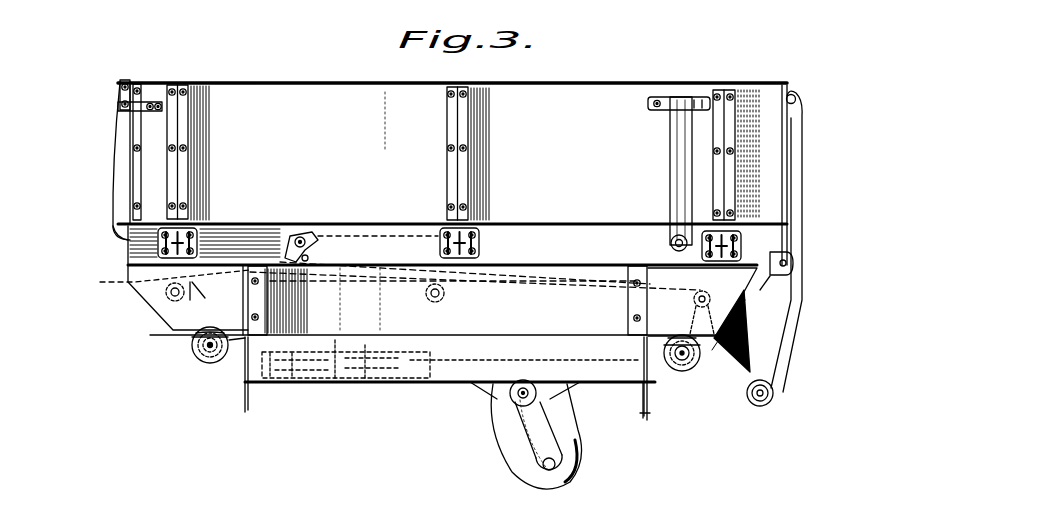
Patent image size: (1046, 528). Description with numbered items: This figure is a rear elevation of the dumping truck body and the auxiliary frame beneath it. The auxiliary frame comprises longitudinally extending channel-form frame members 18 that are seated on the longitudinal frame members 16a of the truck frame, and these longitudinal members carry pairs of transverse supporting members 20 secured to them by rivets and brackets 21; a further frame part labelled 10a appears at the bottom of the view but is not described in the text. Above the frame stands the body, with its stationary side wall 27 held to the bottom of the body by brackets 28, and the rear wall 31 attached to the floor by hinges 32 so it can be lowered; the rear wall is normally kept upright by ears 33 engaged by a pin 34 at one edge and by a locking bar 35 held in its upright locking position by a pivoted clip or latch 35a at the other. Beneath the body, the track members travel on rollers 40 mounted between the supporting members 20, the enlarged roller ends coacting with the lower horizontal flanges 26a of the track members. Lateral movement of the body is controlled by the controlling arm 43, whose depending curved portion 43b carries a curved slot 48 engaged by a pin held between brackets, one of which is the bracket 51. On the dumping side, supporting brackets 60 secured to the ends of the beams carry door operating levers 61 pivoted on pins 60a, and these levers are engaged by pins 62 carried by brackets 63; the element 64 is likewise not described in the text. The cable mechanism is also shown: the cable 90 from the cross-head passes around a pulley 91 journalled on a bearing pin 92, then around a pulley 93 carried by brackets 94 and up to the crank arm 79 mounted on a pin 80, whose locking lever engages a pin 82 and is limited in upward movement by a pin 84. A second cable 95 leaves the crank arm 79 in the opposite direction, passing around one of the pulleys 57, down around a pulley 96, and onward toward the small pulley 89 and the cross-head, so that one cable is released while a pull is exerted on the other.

The lower side sill 10a is at (247, 412).
The longitudinal frame members 16a is at (636, 415).
The longitudinally extending frame members 18 is at (244, 373).
The transverse supporting members 20 is at (165, 311).
The brackets 21 is at (239, 268).
The lower horizontal flanges 26a is at (90, 287).
The stationary side wall 27 is at (128, 178).
The brackets 28 is at (113, 228).
The rear wall 31 is at (452, 174).
The hinges 32 is at (167, 186).
The ears 33 is at (120, 104).
The pin 34 is at (124, 111).
The locking bar 35 is at (672, 141).
The pivoted clip or latch 35a is at (683, 100).
The rollers 40 is at (166, 284).
The controlling arms 43 is at (530, 491).
The depending curved portion 43b is at (530, 450).
The curved slot 48 is at (532, 428).
The bracket 51 is at (480, 394).
The pulleys 57 is at (700, 303).
The supporting brackets 60 is at (737, 355).
The pins 60a is at (768, 405).
The door operating levers 61 is at (802, 148).
The pins 62 is at (790, 262).
The brackets 63 is at (788, 274).
The arm head 64 is at (789, 103).
The crank arm 79 is at (307, 233).
The pin 80 is at (312, 253).
The pin 82 is at (190, 300).
The pin 84 is at (208, 225).
The small pulley 89 is at (292, 340).
The cable 90 is at (237, 355).
The pulley 91 is at (367, 383).
The bearing pin 92 is at (337, 383).
The pulley 93 is at (208, 356).
The brackets 94 is at (204, 338).
The cable 95 is at (558, 259).
The pulley 96 is at (695, 372).